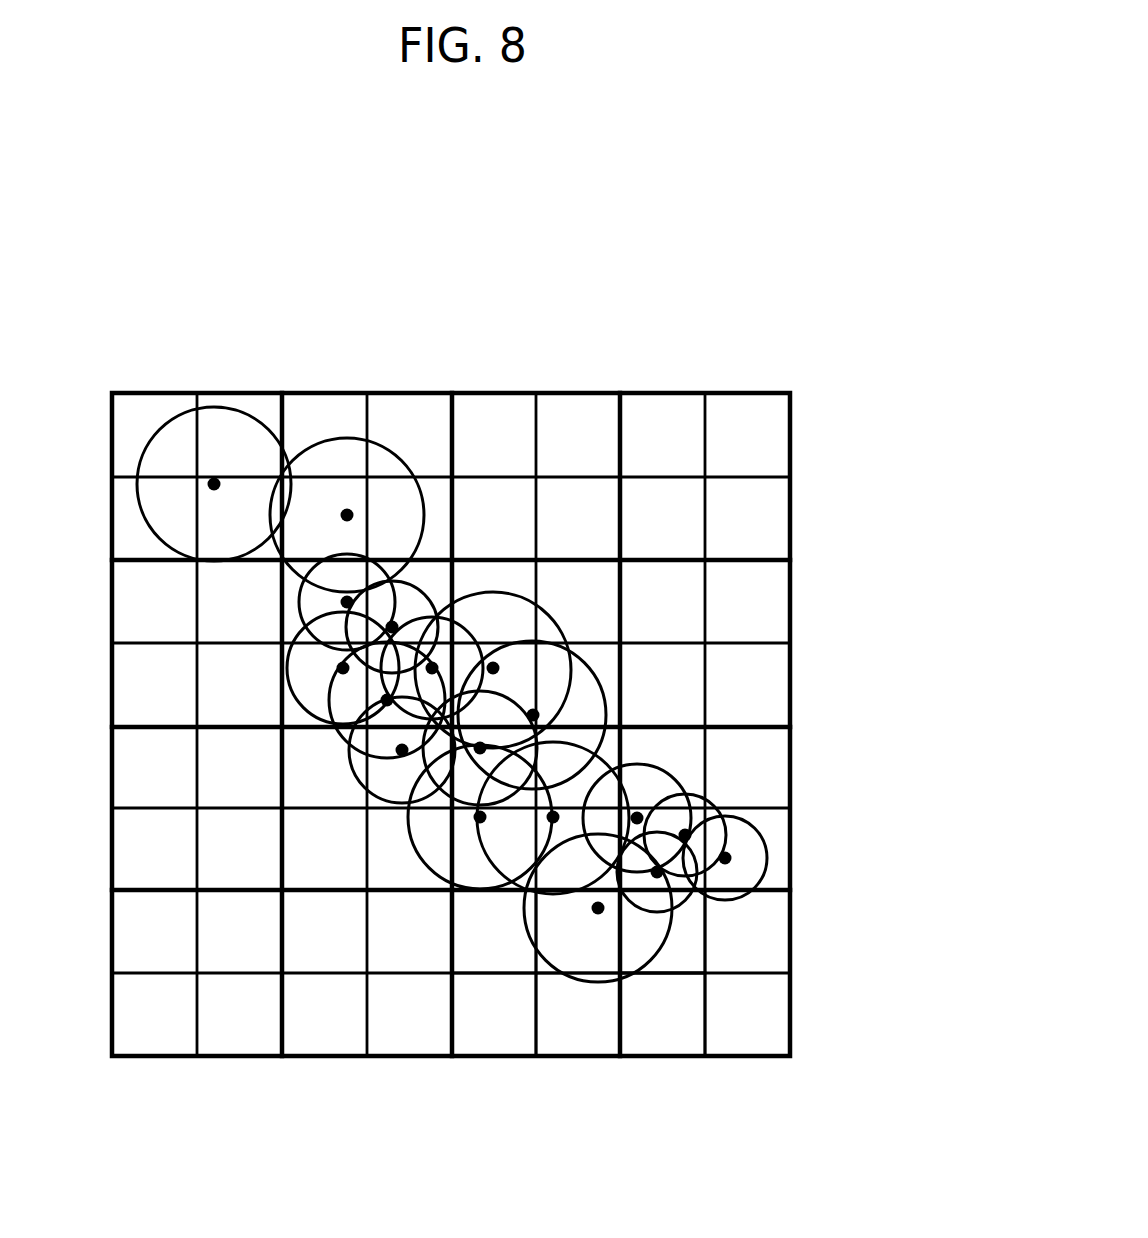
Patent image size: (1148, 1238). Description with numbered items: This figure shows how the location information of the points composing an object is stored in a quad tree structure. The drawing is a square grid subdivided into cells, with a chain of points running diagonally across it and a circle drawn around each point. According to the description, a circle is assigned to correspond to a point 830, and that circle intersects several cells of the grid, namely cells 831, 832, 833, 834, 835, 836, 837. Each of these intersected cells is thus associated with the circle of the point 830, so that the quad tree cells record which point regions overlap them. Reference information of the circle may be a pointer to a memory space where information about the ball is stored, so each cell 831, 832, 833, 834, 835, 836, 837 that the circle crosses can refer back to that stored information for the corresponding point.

The point 830 is at (598, 915).
The cell 831 is at (482, 873).
The cell 832 is at (567, 867).
The cell 833 is at (668, 847).
The cell 834 is at (688, 935).
The cell 835 is at (663, 1033).
The cell 836 is at (582, 1027).
The cell 837 is at (505, 955).